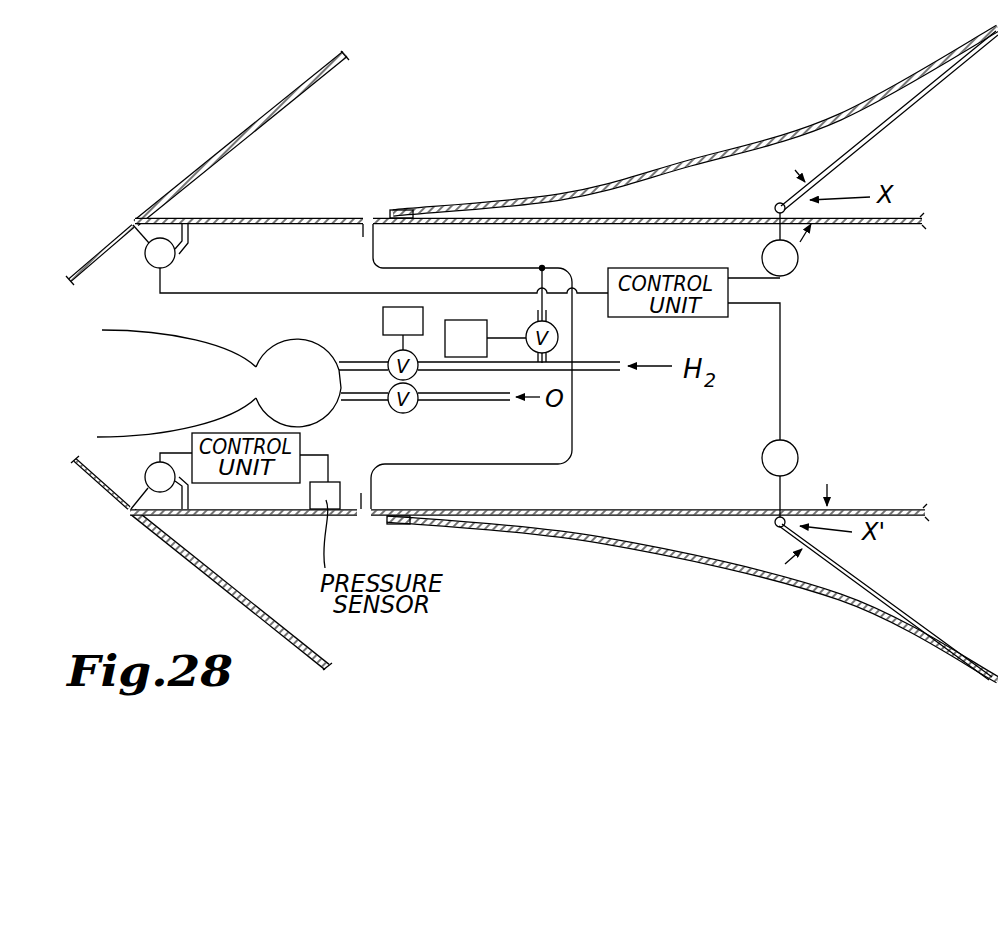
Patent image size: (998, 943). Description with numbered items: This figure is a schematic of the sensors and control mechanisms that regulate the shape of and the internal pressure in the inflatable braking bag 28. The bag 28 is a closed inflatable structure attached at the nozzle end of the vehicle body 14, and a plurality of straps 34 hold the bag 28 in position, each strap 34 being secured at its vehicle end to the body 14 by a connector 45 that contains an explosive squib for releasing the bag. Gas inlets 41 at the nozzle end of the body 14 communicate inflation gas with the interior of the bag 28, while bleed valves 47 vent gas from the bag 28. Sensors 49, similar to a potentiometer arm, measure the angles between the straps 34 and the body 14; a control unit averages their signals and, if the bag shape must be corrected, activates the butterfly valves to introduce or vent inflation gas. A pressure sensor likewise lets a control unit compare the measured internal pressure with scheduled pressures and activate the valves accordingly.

The vehicle body 14 is at (298, 218).
The bag member 28 is at (302, 99).
The strap 34 is at (893, 121).
The gas inlet 41 is at (190, 212).
The connector 45 is at (775, 207).
The bleed valve 47 is at (133, 222).
The sensor 49 is at (821, 178).